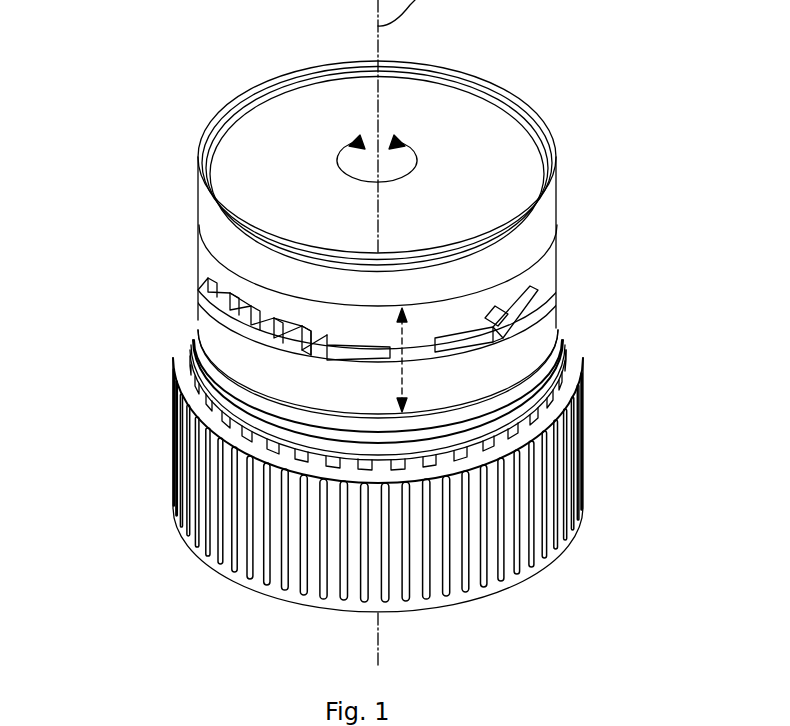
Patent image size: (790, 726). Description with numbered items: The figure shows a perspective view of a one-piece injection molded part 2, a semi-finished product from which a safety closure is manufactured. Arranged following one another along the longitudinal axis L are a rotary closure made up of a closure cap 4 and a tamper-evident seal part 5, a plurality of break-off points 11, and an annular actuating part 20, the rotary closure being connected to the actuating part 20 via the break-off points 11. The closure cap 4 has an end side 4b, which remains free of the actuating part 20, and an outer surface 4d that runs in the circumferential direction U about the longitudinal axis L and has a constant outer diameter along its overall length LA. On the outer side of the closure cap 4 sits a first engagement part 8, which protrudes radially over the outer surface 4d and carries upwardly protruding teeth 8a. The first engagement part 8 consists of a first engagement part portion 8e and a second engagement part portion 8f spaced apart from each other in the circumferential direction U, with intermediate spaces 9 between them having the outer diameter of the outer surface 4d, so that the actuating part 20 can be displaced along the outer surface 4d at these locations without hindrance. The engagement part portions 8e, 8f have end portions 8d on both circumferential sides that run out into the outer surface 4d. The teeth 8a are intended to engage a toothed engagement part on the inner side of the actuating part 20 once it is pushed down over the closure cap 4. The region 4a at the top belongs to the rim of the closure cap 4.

The injection molded part 2 is at (572, 83).
The closure cap 4 is at (545, 258).
The top rim of upper closure part 4a is at (313, 97).
The end side 4b is at (468, 128).
The outer surface 4d is at (558, 240).
The tamper-evident seal part 5 is at (530, 419).
The first engagement part 8 is at (378, 324).
The teeth 8a is at (230, 297).
The end portions 8d is at (350, 356).
The first engagement part portion 8e is at (235, 318).
The second engagement part portion 8f is at (518, 328).
The intermediate spaces 9 is at (418, 398).
The break-off points 11 is at (250, 428).
The actuating part 20 is at (567, 497).
The circumferential direction U is at (417, 166).
The longitudinal axis L is at (377, 626).
The overall length LA is at (410, 348).